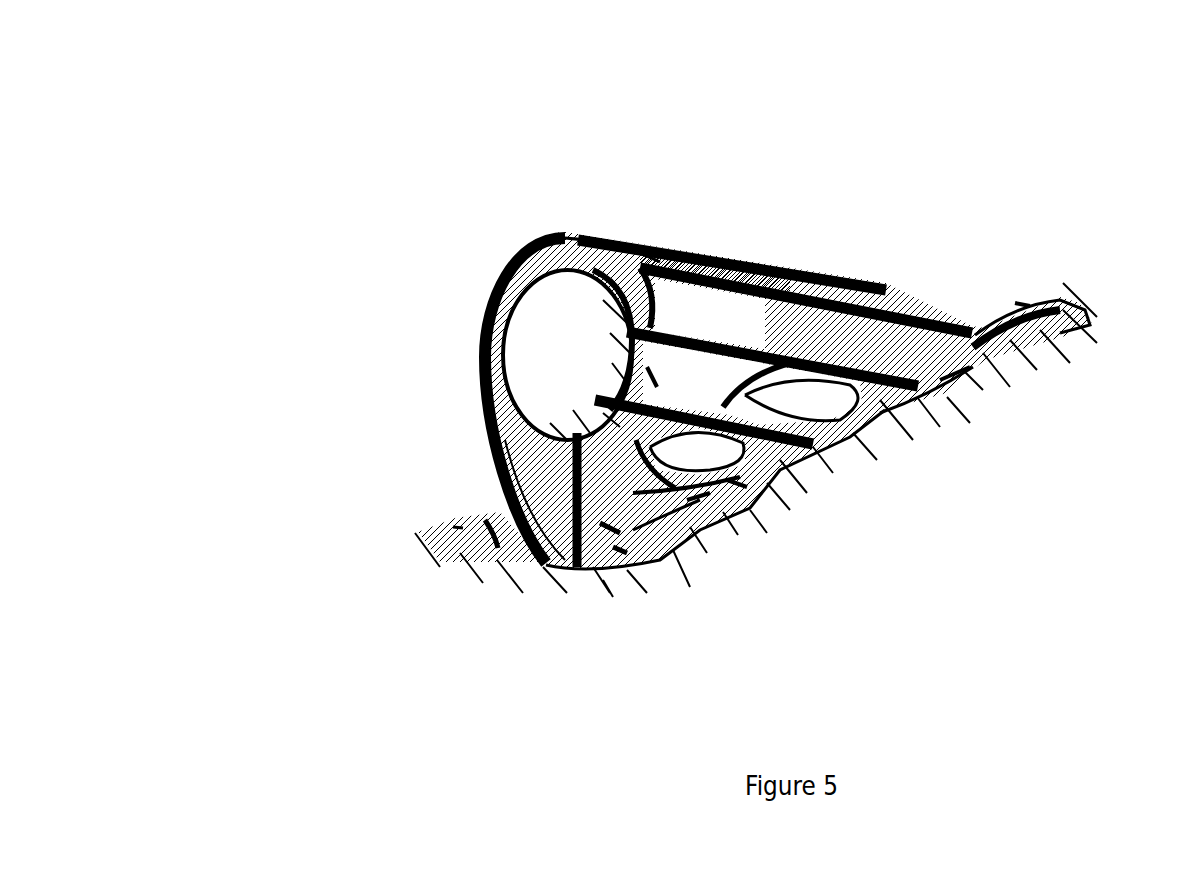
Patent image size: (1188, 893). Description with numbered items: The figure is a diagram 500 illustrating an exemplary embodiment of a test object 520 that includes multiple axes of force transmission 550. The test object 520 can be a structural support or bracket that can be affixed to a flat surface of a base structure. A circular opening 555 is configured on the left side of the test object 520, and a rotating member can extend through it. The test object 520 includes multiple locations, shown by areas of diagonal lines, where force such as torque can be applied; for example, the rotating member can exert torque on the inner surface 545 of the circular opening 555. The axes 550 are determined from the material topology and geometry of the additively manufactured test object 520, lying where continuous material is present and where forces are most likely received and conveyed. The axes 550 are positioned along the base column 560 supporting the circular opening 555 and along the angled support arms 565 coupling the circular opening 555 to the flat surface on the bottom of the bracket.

The diagram 500 is at (312, 57).
The test object 520 is at (417, 243).
The inner surface 545 is at (613, 363).
The axes of force transmission 550 is at (827, 273).
The circular opening 555 is at (540, 367).
The base column 560 is at (525, 497).
The angled support arms 565 is at (772, 347).